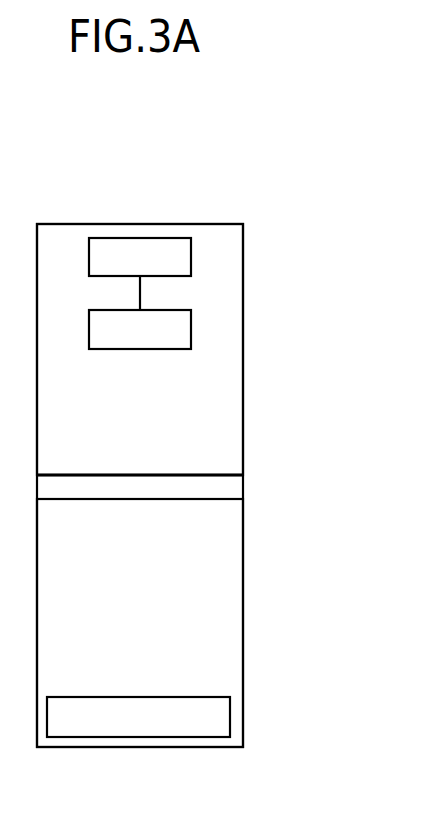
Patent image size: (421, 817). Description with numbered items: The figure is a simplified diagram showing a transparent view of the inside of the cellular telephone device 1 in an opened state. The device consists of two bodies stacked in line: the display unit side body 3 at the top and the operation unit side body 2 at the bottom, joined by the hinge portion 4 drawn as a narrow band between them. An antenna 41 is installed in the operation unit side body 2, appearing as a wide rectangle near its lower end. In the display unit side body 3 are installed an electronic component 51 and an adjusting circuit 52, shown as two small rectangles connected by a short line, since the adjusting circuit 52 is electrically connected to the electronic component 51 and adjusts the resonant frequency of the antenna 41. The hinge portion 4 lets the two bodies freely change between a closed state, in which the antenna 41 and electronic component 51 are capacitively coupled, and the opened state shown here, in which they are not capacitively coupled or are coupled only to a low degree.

The cellular telephone device 1 is at (256, 152).
The operation unit side body 2 is at (261, 613).
The display unit side body 3 is at (269, 418).
The hinge portion 4 is at (265, 484).
The antenna 41 is at (221, 718).
The electronic component 51 is at (183, 259).
The adjusting circuit 52 is at (183, 331).